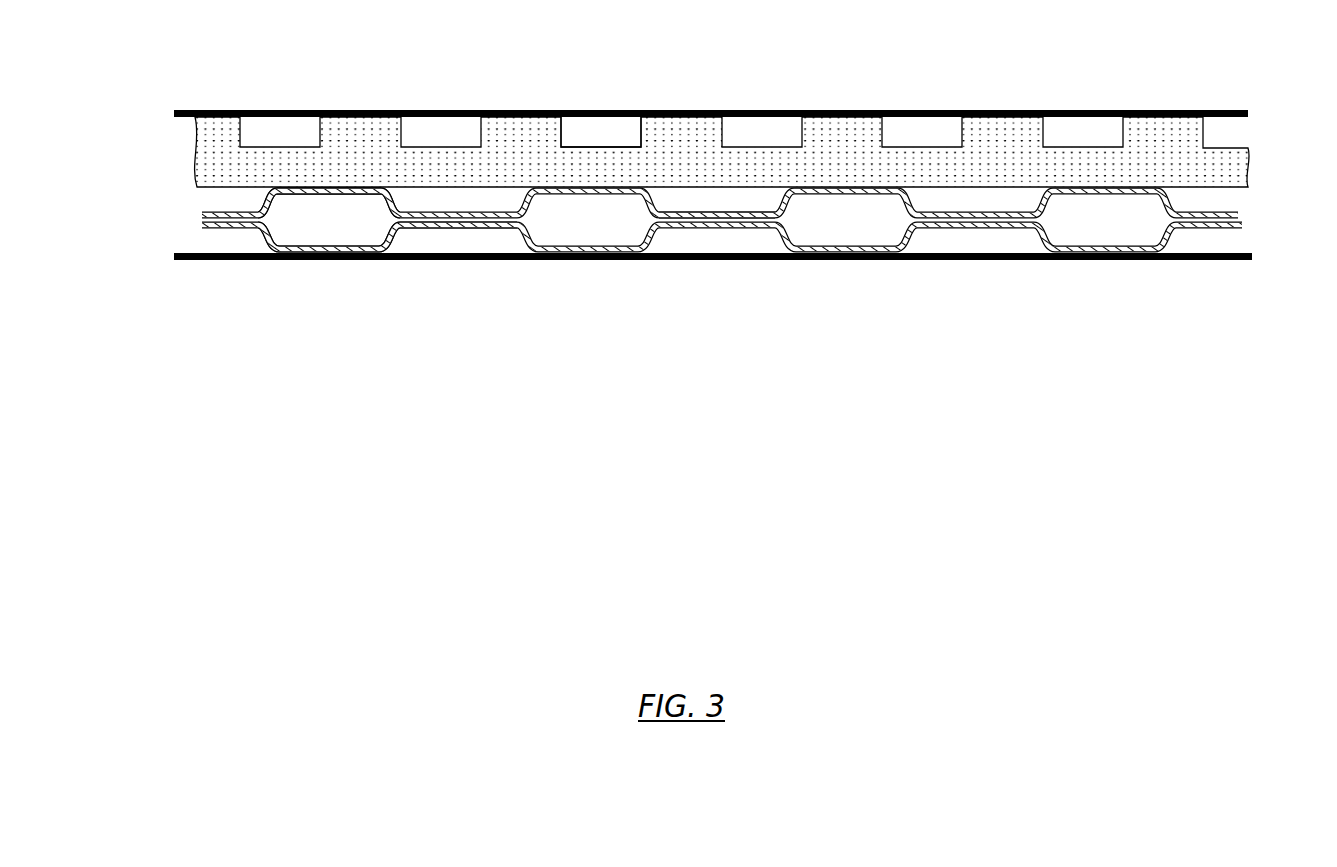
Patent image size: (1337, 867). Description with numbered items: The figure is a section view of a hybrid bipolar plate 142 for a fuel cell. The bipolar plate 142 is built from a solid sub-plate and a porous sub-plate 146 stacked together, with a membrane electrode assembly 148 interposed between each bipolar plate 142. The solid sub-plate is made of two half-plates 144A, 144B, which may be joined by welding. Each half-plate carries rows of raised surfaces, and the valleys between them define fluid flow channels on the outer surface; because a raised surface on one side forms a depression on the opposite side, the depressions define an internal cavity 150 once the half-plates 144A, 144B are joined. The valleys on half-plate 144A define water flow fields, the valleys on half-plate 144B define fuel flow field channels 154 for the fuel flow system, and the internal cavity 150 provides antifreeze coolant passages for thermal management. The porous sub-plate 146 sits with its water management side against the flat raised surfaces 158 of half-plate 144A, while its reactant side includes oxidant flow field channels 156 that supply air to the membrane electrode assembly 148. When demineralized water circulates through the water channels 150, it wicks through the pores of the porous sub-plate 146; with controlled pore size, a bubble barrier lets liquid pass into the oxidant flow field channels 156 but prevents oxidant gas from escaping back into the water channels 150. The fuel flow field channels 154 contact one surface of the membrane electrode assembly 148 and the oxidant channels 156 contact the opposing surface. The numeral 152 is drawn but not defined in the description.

The hybrid bipolar plate 142 is at (173, 125).
The half-plate 144A is at (1238, 213).
The half-plate 144B is at (1240, 223).
The porous sub-plate 146 is at (837, 132).
The membrane electrode assembly 148 is at (1228, 263).
The internal cavity 150 is at (345, 225).
The upper sheet portion 152 is at (715, 195).
The fuel flow field channels 154 is at (465, 237).
The oxidant flow field channels 156 is at (607, 130).
The flat raised surfaces 158 is at (340, 188).